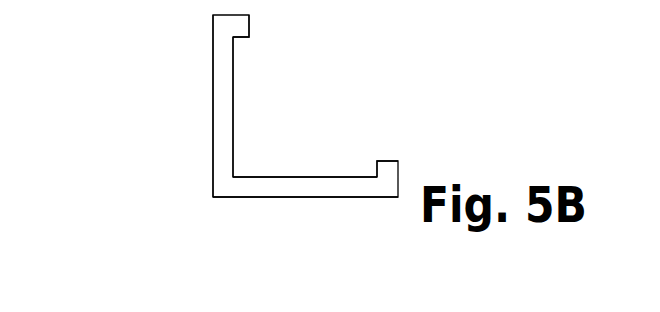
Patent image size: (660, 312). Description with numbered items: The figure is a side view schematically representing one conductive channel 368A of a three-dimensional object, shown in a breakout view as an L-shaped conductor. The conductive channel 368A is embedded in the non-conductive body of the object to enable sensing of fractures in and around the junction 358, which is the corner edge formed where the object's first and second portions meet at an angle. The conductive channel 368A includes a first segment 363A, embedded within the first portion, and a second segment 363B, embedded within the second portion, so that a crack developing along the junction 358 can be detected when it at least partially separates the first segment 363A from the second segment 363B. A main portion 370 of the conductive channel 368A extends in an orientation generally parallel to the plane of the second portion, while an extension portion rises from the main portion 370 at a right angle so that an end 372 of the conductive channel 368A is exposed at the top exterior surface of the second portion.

The junction 358 is at (212, 197).
The end of the conductive channel 372 is at (250, 22).
The conductive channel 368A is at (205, 92).
The first segment 363A is at (240, 92).
The second segment 363B is at (276, 168).
The main portion 370 is at (337, 197).